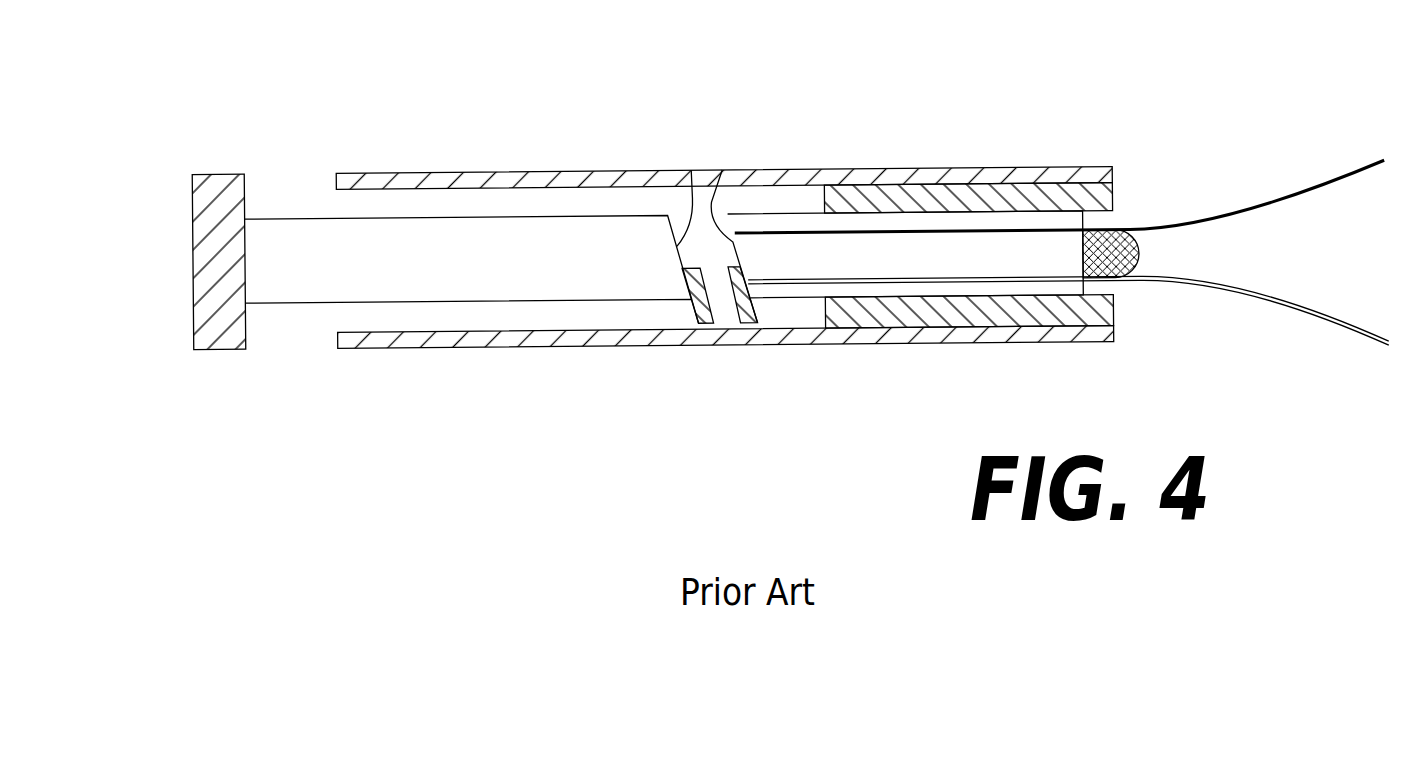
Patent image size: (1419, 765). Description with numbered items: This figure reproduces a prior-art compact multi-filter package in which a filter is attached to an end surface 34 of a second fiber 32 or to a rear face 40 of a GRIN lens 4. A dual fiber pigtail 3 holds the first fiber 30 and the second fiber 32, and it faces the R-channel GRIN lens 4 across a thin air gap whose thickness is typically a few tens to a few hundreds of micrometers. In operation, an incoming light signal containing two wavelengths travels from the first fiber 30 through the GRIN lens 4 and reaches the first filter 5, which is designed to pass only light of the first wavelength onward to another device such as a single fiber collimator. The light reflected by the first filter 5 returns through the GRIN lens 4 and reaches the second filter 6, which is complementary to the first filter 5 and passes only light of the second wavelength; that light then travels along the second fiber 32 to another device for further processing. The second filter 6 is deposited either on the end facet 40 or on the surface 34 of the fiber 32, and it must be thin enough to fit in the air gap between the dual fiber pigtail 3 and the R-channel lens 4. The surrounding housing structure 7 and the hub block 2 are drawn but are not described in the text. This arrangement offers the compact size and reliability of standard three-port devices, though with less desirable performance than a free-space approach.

The hub block 2 is at (895, 200).
The dual fiber pigtail 3 is at (957, 253).
The GRIN lens 4 is at (521, 245).
The first filter 5 is at (222, 318).
The second filter 6 is at (727, 323).
The syringe barrel 7 is at (400, 205).
The first fiber 30 is at (1207, 222).
The second fiber 32 is at (1198, 283).
The end surface of the second fiber 34 is at (720, 172).
The rear face of the GRIN lens 40 is at (692, 170).